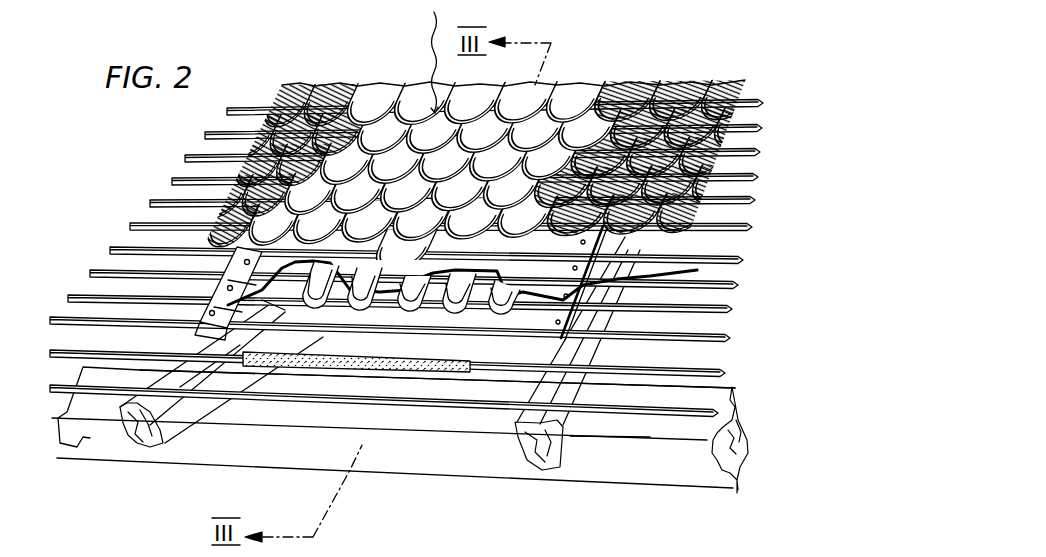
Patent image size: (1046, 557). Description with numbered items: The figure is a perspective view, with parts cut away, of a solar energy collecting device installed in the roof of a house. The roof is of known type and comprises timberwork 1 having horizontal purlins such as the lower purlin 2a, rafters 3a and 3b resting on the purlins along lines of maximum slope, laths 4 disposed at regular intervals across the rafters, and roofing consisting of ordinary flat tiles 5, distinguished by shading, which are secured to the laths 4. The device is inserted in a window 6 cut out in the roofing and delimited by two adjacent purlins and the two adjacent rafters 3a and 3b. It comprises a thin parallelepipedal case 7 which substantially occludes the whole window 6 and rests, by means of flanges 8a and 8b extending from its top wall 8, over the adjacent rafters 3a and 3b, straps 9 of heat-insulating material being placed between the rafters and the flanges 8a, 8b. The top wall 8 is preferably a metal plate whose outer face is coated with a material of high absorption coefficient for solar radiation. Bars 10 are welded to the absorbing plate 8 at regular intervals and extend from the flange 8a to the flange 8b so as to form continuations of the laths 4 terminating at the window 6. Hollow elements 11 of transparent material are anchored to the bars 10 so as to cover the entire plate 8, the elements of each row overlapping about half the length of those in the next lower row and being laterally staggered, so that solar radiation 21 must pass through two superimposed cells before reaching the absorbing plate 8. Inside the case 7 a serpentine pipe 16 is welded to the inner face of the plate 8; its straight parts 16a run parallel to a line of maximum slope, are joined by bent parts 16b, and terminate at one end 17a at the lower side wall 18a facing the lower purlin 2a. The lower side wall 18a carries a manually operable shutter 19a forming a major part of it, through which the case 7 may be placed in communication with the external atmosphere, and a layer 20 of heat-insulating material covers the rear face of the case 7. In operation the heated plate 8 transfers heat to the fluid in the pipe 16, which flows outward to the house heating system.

The timberwork 1 is at (427, 258).
The lower purlin 2a is at (702, 467).
The rafter 3a is at (150, 447).
The rafter 3b is at (527, 473).
The laths 4 is at (533, 348).
The ordinary flat tiles 5 is at (715, 97).
The window 6 is at (457, 141).
The case 7 is at (650, 387).
The top wall 8 is at (540, 240).
The flange 8a is at (240, 298).
The flange 8b is at (567, 447).
The straps 9 is at (562, 320).
The bars 10 is at (553, 257).
The hollow elements 11 is at (383, 100).
The pipe 16 is at (240, 247).
The straight parts 16a is at (275, 372).
The bent parts 16b is at (443, 313).
The end of pipe 17a is at (262, 258).
The lower side wall 18a is at (78, 447).
The shutter 19a is at (330, 327).
The layer of heat-insulating material 20 is at (383, 367).
The solar radiation 21 is at (434, 60).